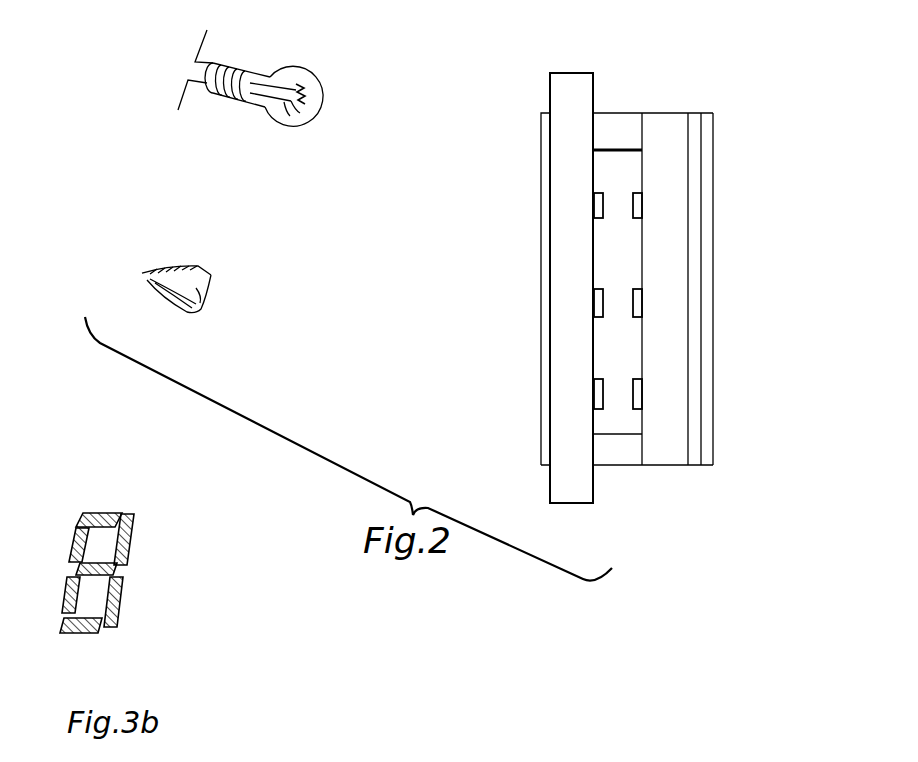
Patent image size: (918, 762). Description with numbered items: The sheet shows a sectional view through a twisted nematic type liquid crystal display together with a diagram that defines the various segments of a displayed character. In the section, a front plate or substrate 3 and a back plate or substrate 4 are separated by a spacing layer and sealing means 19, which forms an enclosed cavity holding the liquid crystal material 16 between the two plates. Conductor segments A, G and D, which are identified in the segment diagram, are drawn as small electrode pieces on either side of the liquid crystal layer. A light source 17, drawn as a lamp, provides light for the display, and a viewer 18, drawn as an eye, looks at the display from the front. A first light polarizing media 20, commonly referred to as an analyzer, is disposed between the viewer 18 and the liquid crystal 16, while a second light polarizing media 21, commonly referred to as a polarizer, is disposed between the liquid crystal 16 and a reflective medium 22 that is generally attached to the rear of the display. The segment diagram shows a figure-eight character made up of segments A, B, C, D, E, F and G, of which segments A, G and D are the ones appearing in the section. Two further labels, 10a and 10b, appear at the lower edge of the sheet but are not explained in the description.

In FIG. 2, the front plate 3 is at (572, 493).
In FIG. 2, the back plate 4 is at (665, 455).
In FIG. 2, the liquid crystal material 16 is at (630, 172).
In FIG. 2, the light source 17 is at (308, 82).
In FIG. 2, the viewer 18 is at (180, 315).
In FIG. 2, the spacing layer and sealing means 19 is at (615, 122).
In FIG. 2, the first light polarizing media 20 is at (541, 468).
In FIG. 2, the second light polarizing media 21 is at (693, 460).
In FIG. 2, the reflective medium 22 is at (710, 156).
In FIG. 2, the display element 10a is at (690, 760).
In FIG. 2, the display element 10b is at (735, 760).
In FIG. 2, the conductor segment A is at (593, 205).
In FIG. 3B, the conductor segment A is at (97, 512).
In FIG. 3B, the segment B is at (133, 545).
In FIG. 3B, the segment C is at (123, 607).
In FIG. 2, the conductor segment D is at (593, 398).
In FIG. 3B, the conductor segment D is at (82, 635).
In FIG. 3B, the segment E is at (63, 602).
In FIG. 3B, the segment F is at (73, 548).
In FIG. 2, the conductor segment G is at (593, 307).
In FIG. 3B, the conductor segment G is at (118, 570).